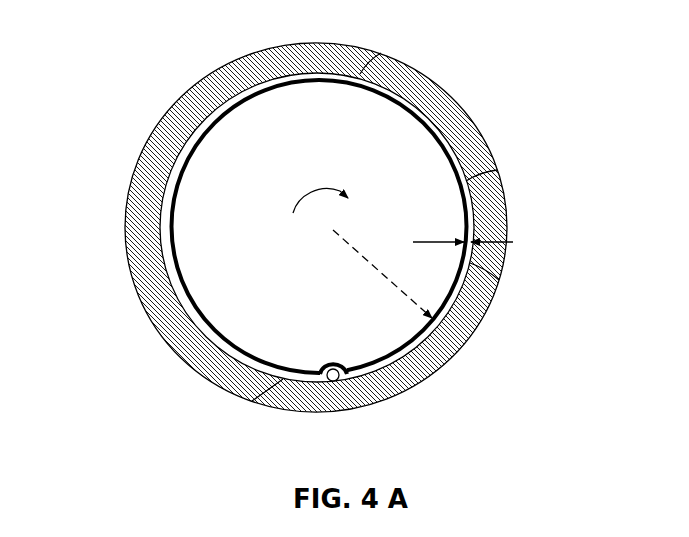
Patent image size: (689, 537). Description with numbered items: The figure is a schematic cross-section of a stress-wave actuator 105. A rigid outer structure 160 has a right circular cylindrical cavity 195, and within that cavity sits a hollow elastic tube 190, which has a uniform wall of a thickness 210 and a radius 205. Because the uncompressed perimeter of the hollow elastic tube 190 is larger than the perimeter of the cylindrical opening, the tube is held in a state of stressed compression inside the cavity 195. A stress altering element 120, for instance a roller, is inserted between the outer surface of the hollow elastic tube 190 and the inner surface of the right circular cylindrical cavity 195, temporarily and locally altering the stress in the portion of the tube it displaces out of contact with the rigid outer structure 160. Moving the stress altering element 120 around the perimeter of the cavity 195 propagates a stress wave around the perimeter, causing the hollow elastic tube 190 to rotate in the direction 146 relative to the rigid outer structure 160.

The stress-wave actuator 105 is at (349, 462).
The stress altering element 120 is at (252, 402).
The direction 146 is at (303, 197).
The rigid outer structure 160 is at (463, 108).
The hollow elastic tube 190 is at (461, 181).
The right circular cylindrical cavity 195 is at (375, 54).
The radius 205 is at (347, 248).
The thickness 210 is at (490, 276).